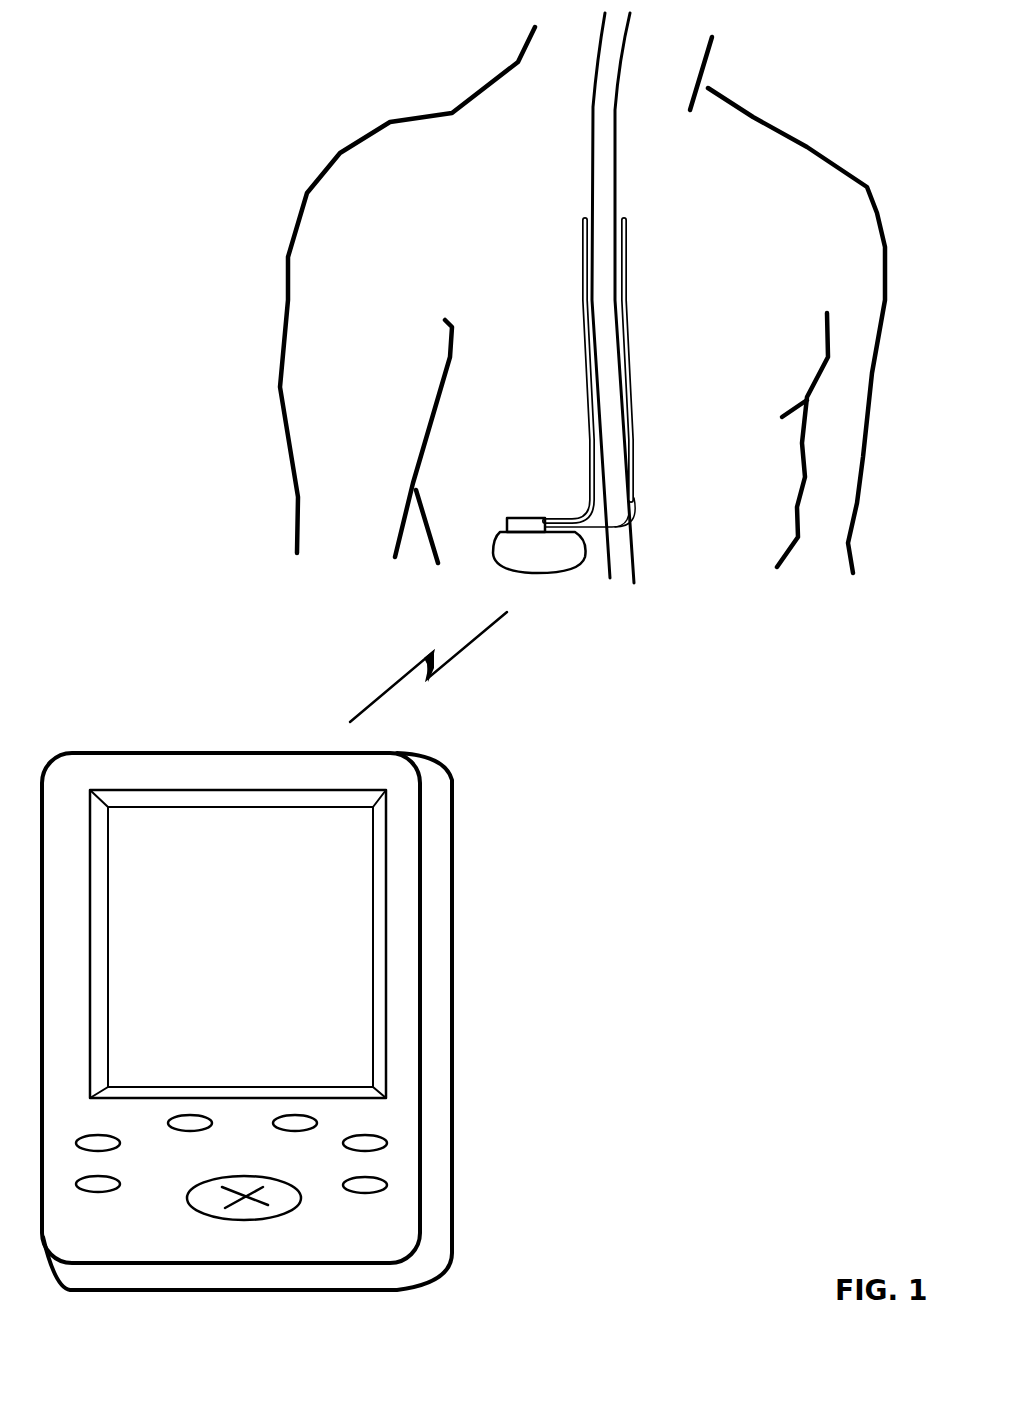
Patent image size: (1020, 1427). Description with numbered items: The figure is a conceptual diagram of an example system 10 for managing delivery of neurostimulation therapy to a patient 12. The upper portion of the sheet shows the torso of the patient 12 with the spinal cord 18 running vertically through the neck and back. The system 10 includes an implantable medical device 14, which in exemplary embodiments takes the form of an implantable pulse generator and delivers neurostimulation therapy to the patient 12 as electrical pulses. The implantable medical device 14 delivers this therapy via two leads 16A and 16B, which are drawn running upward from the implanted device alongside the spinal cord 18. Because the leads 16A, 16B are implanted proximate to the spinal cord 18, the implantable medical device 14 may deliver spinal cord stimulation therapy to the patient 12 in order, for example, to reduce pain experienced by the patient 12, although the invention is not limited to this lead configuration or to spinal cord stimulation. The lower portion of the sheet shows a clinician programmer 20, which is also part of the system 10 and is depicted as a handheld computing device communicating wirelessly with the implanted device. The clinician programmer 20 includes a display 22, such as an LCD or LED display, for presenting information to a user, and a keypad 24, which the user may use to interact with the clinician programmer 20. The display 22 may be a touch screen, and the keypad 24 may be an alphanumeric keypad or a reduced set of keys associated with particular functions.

The system 10 is at (150, 108).
The patient 12 is at (805, 122).
The implantable medical device 14 is at (497, 528).
The lead 16A is at (580, 346).
The lead 16B is at (639, 343).
The spinal cord 18 is at (633, 169).
The clinician programmer 20 is at (130, 745).
The display 22 is at (333, 943).
The keypad 24 is at (337, 1203).